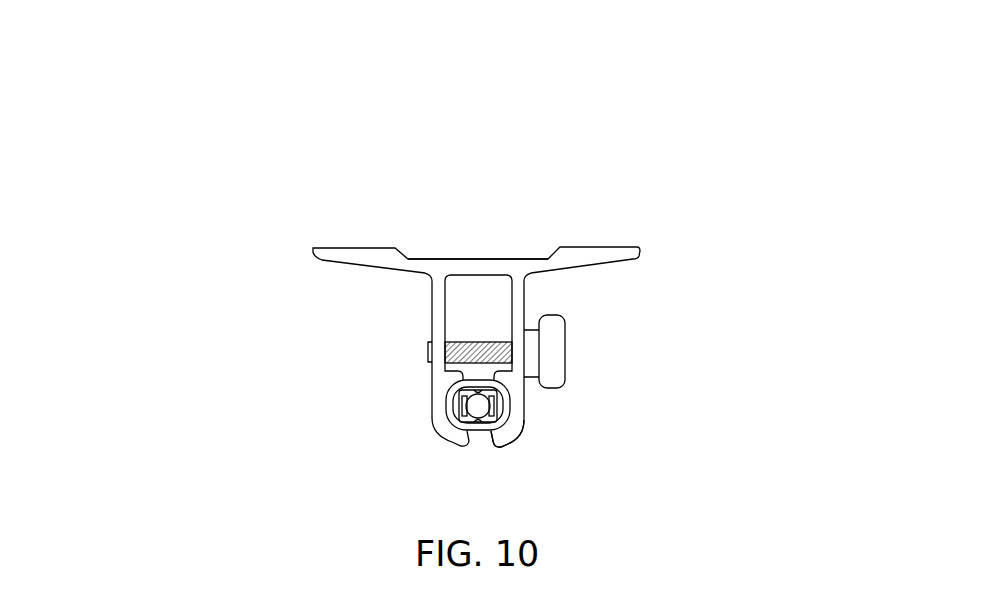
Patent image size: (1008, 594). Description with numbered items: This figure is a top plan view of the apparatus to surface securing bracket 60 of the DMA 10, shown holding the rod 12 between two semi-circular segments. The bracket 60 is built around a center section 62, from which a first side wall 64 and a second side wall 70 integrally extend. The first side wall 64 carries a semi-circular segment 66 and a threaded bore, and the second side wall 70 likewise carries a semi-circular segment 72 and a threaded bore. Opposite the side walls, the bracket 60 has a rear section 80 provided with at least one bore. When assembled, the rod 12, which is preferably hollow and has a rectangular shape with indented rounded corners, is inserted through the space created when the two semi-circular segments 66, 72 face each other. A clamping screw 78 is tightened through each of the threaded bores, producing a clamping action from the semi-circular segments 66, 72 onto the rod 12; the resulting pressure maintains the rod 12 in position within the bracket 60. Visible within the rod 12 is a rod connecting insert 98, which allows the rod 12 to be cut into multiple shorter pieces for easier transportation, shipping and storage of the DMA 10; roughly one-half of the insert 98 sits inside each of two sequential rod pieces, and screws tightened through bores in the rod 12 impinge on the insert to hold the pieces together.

The DMA 10 is at (118, 85).
The rod 12 is at (452, 408).
The apparatus to surface securing bracket 60 is at (641, 234).
The center section 62 is at (477, 347).
The first side wall 64 is at (524, 297).
The semi-circular segment 66 is at (508, 428).
The second side wall 70 is at (437, 317).
The semi-circular segment 72 is at (447, 387).
The clamping screw 78 is at (550, 352).
The rear section 80 is at (573, 258).
The rod connecting insert 98 is at (458, 422).